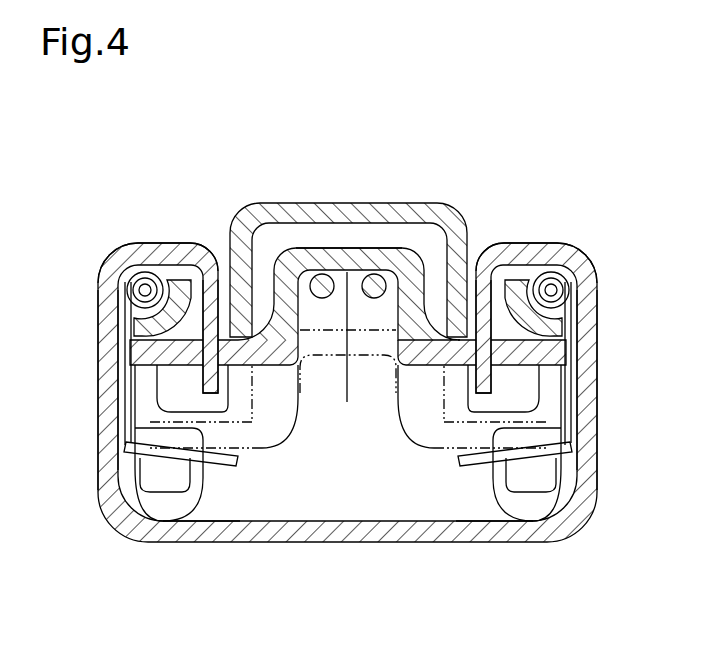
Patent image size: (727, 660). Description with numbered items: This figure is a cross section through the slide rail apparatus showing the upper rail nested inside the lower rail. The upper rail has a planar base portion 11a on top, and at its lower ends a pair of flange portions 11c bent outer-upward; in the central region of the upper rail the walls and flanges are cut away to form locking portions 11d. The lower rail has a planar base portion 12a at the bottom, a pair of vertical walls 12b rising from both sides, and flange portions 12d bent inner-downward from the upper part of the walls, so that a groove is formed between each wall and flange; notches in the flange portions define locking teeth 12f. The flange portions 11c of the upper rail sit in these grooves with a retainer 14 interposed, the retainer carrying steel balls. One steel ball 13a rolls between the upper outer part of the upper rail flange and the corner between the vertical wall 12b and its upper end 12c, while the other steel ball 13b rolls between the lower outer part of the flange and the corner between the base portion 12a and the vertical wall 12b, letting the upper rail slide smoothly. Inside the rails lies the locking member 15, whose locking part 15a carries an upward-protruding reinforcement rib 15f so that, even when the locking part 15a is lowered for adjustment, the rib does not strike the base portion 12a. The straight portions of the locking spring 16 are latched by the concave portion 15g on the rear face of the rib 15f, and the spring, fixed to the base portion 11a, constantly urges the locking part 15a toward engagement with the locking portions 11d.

The base portion 11a is at (345, 203).
The flange portions 11c is at (537, 392).
The locking portions 11d is at (223, 440).
The base portion 12a is at (337, 530).
The vertical walls 12b is at (120, 397).
The upper end 12c is at (162, 255).
The flange portions 12d is at (210, 300).
The locking teeth 12f is at (205, 435).
The steel ball 13a is at (142, 290).
The steel ball 13b is at (133, 492).
The retainer 14 is at (127, 430).
The locking member 15 is at (353, 255).
The locking part 15a is at (137, 360).
The reinforcement rib 15f is at (326, 255).
The concave portion 15g is at (345, 351).
The locking spring 16 is at (312, 277).